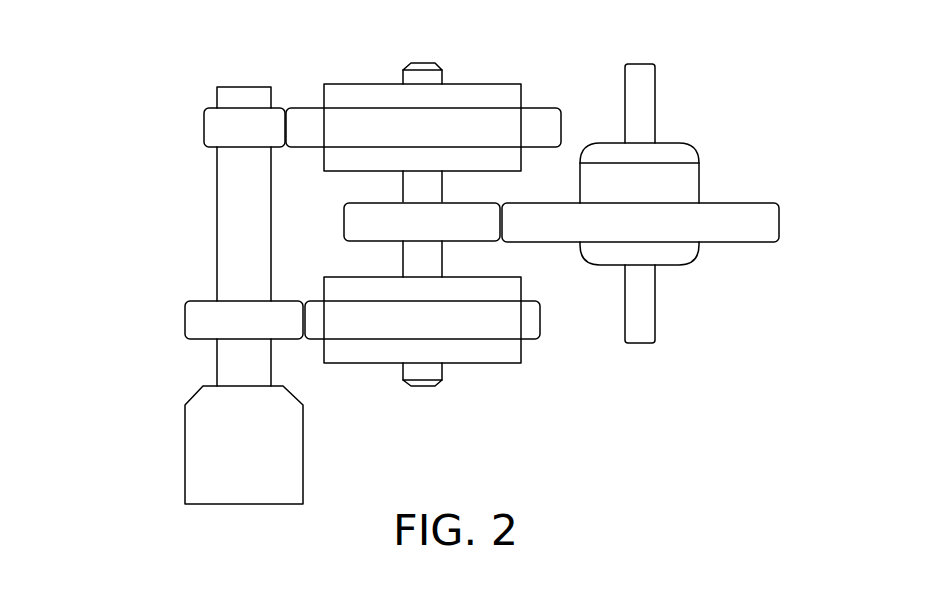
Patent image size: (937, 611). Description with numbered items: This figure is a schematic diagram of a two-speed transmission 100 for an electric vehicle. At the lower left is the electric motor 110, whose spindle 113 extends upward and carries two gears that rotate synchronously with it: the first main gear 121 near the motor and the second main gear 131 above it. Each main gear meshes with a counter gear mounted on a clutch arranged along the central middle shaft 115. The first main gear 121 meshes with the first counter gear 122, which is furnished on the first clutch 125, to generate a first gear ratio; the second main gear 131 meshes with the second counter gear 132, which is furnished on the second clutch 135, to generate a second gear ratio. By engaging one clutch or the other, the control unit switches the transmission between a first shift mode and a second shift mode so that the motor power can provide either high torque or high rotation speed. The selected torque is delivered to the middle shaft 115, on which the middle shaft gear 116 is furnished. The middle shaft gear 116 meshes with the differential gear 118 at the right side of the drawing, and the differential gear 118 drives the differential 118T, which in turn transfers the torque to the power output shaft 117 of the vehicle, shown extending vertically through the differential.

The two-speed transmission 100 is at (82, 32).
The electric motor 110 is at (213, 460).
The spindle 113 is at (228, 360).
The middle shaft 115 is at (418, 63).
The middle shaft gear 116 is at (354, 222).
The power output shaft 117 is at (639, 102).
The differential gear 118 is at (728, 218).
The differential 118T is at (685, 155).
The first main gear 121 is at (205, 318).
The first counter gear 122 is at (532, 320).
The first clutch 125 is at (505, 350).
The second main gear 131 is at (217, 127).
The second counter gear 132 is at (310, 128).
The second clutch 135 is at (472, 98).